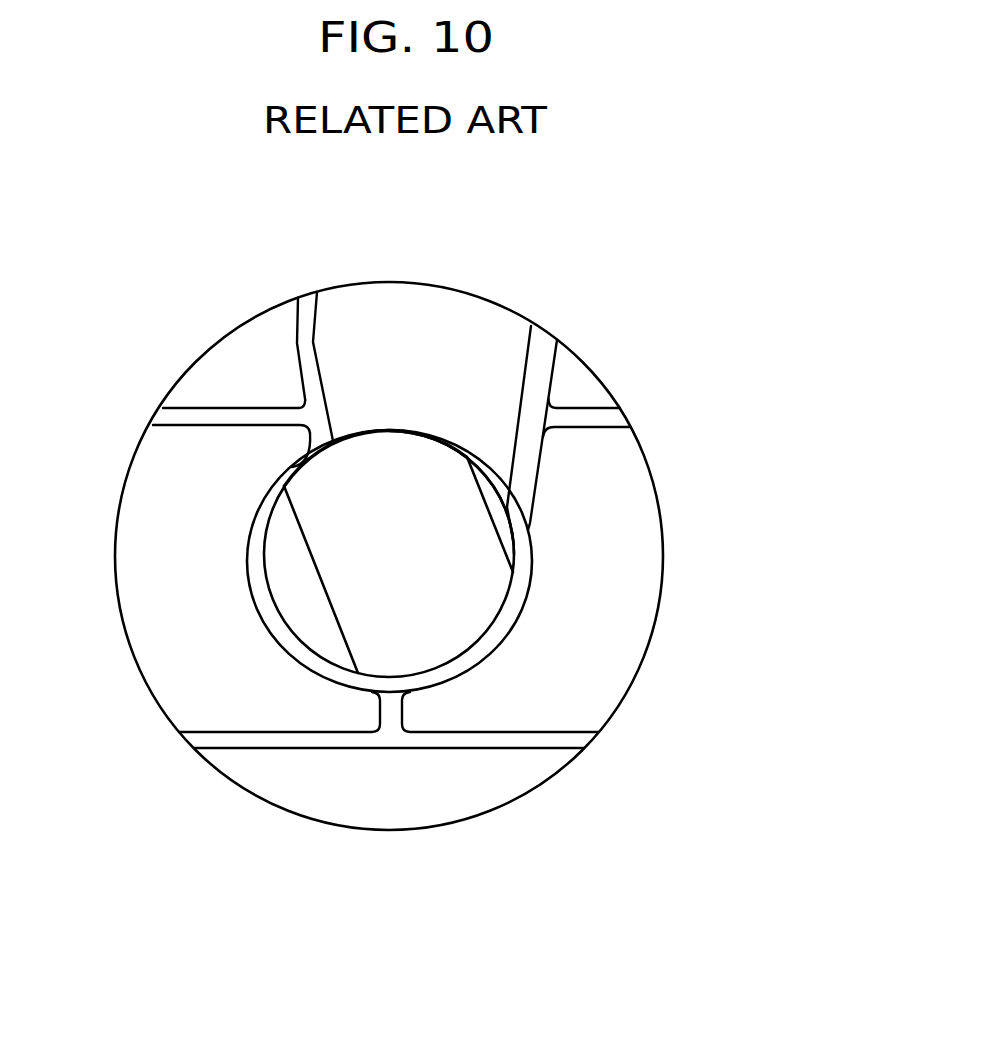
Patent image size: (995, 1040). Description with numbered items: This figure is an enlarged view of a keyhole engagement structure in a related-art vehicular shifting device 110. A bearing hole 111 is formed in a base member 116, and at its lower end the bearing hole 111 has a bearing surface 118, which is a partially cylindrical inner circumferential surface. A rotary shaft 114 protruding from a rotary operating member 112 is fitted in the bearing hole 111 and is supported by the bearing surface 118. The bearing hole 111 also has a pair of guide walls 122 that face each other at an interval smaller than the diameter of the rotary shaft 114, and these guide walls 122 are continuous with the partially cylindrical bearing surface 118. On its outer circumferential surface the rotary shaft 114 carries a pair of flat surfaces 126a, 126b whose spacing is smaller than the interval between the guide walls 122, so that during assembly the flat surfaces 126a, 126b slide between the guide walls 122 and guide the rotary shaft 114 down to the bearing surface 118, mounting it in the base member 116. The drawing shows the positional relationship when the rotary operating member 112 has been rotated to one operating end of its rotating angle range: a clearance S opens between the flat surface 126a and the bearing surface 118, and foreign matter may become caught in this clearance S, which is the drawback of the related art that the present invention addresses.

The vehicular shifting device 110 is at (438, 547).
The base member 116 is at (203, 321).
The guide walls 122 is at (317, 312).
The rotary operating member 112 is at (535, 373).
The bearing hole 111 is at (265, 644).
The bearing surface 118 is at (265, 577).
The rotary shaft 114 is at (510, 614).
The flat surface 126a is at (486, 491).
The flat surface 126b is at (333, 616).
The clearance S is at (505, 653).